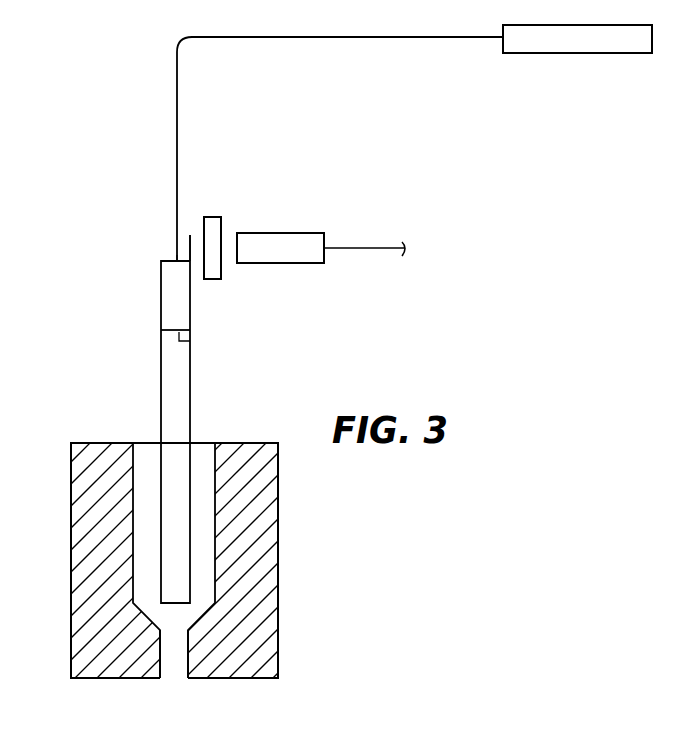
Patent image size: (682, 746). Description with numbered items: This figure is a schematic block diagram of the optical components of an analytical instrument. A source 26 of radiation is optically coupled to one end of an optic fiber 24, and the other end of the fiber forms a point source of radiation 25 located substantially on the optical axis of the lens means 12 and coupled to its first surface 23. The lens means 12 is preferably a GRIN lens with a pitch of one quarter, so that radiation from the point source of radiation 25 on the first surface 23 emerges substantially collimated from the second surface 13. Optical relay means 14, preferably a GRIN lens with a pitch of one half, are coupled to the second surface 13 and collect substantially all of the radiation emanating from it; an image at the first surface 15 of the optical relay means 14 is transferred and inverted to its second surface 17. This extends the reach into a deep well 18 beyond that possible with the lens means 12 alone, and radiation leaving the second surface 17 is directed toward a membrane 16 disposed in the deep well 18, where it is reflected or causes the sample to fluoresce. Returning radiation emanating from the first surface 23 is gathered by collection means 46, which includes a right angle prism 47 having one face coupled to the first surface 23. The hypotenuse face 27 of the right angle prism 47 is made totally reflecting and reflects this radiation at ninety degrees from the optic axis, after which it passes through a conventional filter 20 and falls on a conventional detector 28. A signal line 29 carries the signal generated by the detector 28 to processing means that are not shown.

The lens means 12 is at (163, 294).
The second surface of the lens means 13 is at (168, 330).
The optical relay means 14 is at (176, 381).
The first surface of the optical relay means 15 is at (190, 341).
The membrane 16 is at (178, 630).
The second surface of the optical relay means 17 is at (177, 603).
The deep well 18 is at (145, 562).
The filter 20 is at (221, 272).
The first surface of the lens means 23 is at (160, 270).
The optic fiber 24 is at (177, 129).
The point source of radiation 25 is at (180, 254).
The source of radiation 26 is at (543, 44).
The hypotenuse face 27 is at (167, 253).
The detector 28 is at (321, 235).
The signal line 29 is at (350, 250).
The collection means 46 is at (160, 250).
The right angle prism 47 is at (179, 256).